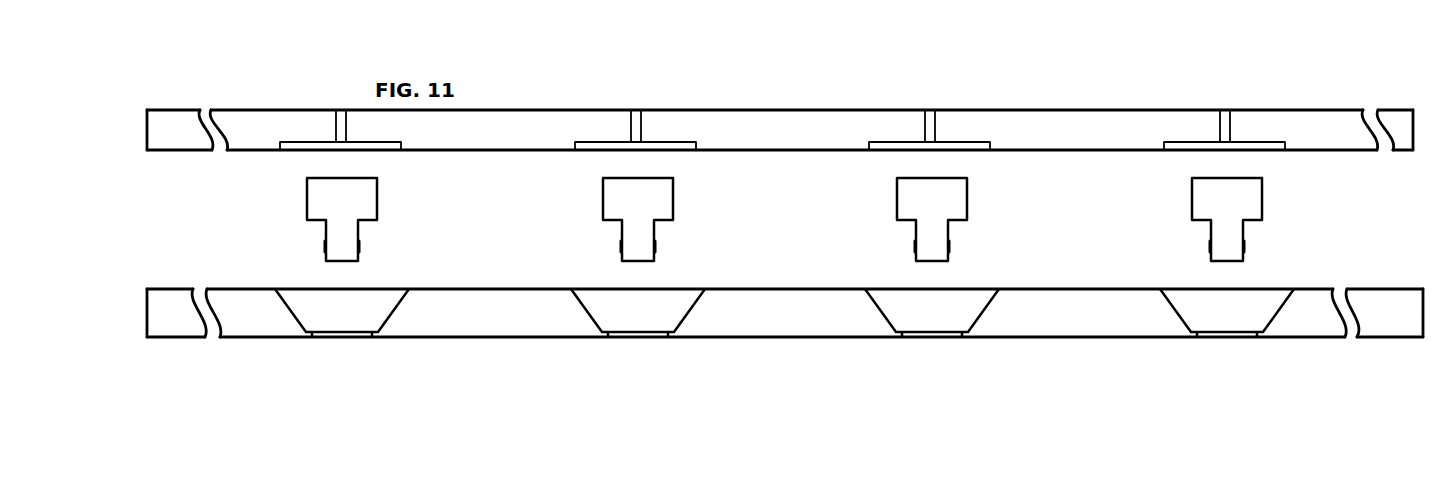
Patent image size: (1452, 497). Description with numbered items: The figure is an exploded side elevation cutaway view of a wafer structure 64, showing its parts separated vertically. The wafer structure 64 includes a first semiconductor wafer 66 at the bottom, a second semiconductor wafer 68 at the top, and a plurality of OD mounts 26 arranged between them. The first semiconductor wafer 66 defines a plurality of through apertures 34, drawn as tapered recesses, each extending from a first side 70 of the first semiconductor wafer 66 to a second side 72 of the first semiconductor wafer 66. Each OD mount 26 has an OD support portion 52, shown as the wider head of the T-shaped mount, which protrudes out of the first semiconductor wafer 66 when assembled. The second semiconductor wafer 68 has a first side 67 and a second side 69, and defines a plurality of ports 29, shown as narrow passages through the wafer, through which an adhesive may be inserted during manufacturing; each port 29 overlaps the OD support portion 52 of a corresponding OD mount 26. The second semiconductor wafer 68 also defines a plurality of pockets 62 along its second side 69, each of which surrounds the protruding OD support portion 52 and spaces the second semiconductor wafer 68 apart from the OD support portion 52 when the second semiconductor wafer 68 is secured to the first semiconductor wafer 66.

The wafer structure 64 is at (283, 63).
The first side of the second semiconductor wafer 67 is at (1335, 110).
The second semiconductor wafer 68 is at (1035, 108).
The second side of the second semiconductor wafer 69 is at (1343, 150).
The port 29 is at (929, 112).
The pocket 62 is at (602, 143).
The OD mount 26 is at (603, 200).
The OD support portion 52 is at (380, 197).
The first semiconductor wafer 66 is at (1050, 337).
The first side of the first semiconductor wafer 70 is at (1037, 288).
The second side of the first semiconductor wafer 72 is at (745, 337).
The through aperture 34 is at (940, 300).